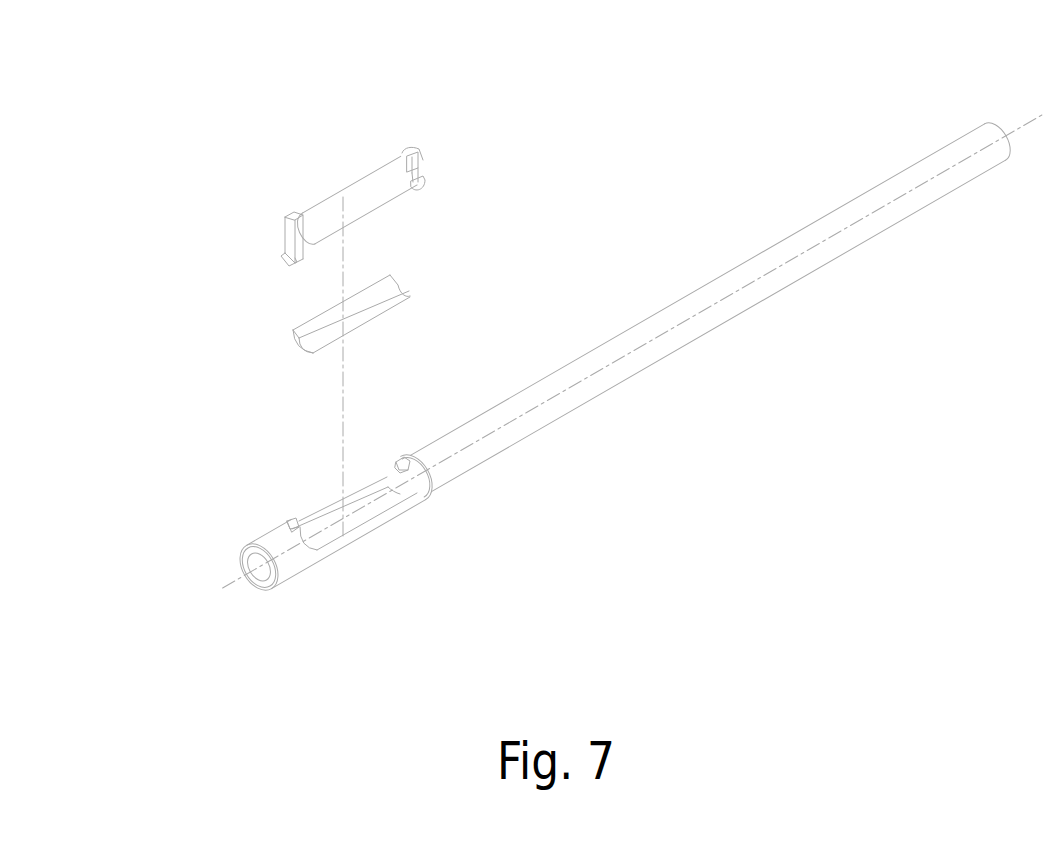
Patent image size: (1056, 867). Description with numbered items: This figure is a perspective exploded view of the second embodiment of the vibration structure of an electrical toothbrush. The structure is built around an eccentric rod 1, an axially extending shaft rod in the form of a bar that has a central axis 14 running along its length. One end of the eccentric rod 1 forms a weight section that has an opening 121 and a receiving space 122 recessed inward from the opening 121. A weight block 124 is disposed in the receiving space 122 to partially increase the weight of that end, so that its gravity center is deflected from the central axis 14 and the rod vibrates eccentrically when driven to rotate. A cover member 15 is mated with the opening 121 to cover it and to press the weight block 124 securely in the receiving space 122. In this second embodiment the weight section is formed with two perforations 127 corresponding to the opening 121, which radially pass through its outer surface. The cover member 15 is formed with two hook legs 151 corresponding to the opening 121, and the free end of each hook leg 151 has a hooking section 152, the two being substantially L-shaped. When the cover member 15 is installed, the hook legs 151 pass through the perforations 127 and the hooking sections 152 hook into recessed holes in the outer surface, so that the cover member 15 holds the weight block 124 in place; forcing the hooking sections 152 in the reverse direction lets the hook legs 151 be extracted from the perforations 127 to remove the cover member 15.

The eccentric rod 1 is at (199, 123).
The central axis 14 is at (222, 590).
The cover member 15 is at (350, 178).
The opening 121 is at (327, 510).
The receiving space 122 is at (367, 503).
The weight block 124 is at (298, 340).
The perforations 127 is at (291, 521).
The hook legs 151 is at (421, 163).
The hooking section 152 is at (422, 188).